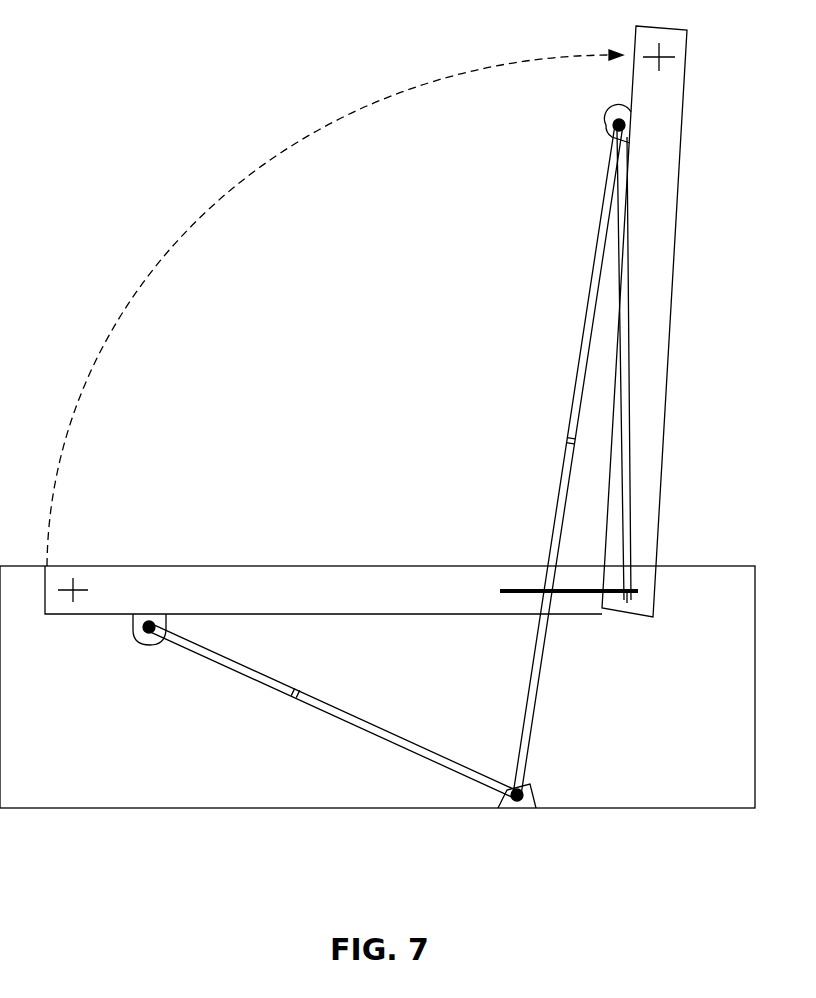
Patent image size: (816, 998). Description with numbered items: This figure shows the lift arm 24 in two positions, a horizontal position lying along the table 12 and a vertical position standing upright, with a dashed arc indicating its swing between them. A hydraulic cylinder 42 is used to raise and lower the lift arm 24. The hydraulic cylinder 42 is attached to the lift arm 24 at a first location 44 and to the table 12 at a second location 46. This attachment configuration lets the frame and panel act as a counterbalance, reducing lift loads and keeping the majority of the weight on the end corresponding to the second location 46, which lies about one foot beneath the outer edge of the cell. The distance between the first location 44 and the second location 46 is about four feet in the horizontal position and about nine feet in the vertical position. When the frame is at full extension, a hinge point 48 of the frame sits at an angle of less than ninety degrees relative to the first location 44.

The table 12 is at (582, 870).
The lift arm 24 is at (663, 183).
The hydraulic cylinder 42 is at (373, 734).
The first location 44 is at (129, 630).
The second location 46 is at (508, 828).
The hinge point 48 is at (640, 597).